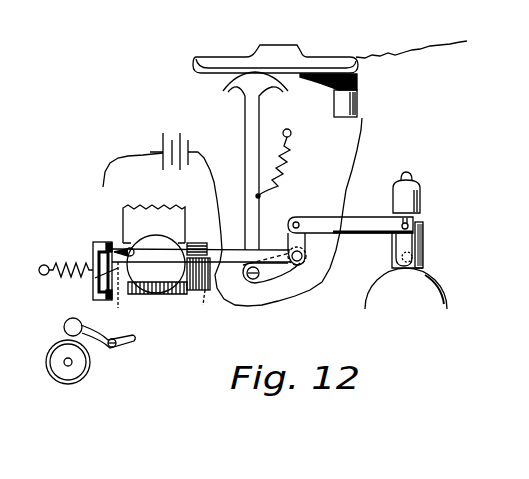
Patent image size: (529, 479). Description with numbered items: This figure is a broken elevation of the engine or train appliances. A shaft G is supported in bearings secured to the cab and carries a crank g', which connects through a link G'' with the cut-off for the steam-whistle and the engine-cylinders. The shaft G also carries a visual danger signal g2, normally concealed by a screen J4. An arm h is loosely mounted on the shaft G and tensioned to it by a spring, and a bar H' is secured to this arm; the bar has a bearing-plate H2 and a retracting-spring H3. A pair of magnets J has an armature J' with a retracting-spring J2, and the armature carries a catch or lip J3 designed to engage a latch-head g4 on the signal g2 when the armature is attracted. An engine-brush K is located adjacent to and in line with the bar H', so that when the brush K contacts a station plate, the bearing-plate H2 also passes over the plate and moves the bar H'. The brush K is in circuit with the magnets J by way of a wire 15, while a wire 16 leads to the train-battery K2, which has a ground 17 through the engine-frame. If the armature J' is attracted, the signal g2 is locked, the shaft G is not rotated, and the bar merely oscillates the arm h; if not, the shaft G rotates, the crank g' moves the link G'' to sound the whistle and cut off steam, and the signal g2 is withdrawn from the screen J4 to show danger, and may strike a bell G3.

The bearing-plate H2 is at (271, 71).
The engine-brush K is at (357, 86).
The train-battery K2 is at (174, 141).
The bar H' is at (255, 161).
The retracting-spring H3 is at (286, 163).
The wire 16 is at (280, 212).
The ground 17 is at (133, 163).
The wire 15 is at (367, 149).
The screen J4 is at (154, 212).
The visual danger signal g2 is at (149, 264).
The magnets J is at (169, 282).
The latch-head g4 is at (118, 290).
The armature J' is at (102, 261).
The retracting-spring J2 is at (66, 254).
The catch or lip J3 is at (95, 278).
The shaft G is at (193, 223).
The crank g' is at (308, 243).
The arm h is at (271, 281).
The link G'' is at (367, 240).
The bell G3 is at (90, 354).